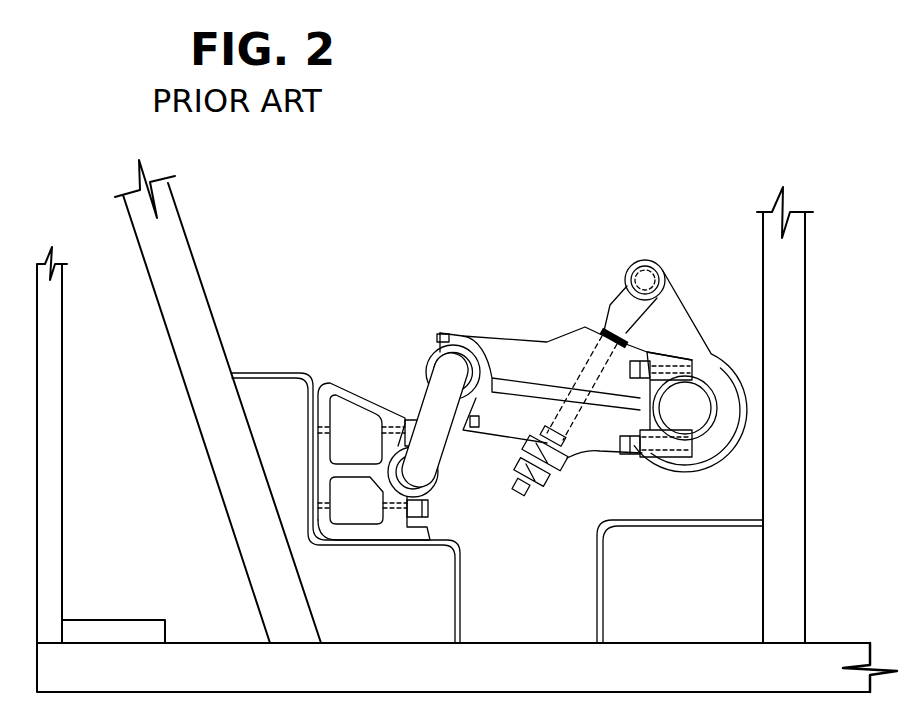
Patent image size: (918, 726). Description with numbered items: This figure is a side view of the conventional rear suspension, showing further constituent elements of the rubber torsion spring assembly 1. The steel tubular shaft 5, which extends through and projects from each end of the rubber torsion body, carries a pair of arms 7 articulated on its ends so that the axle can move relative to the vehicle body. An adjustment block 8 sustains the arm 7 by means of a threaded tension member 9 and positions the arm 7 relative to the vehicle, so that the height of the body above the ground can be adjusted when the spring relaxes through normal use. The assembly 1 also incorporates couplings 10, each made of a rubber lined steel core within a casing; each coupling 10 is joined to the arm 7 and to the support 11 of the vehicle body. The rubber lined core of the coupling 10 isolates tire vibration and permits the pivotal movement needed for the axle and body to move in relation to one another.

The rubber torsion spring assembly 1 is at (737, 362).
The tubular shaft 5 is at (693, 423).
The arm 7 is at (547, 363).
The adjustment block 8 is at (562, 473).
The threaded tension member 9 is at (617, 308).
The coupling 10 is at (438, 408).
The support 11 is at (406, 524).